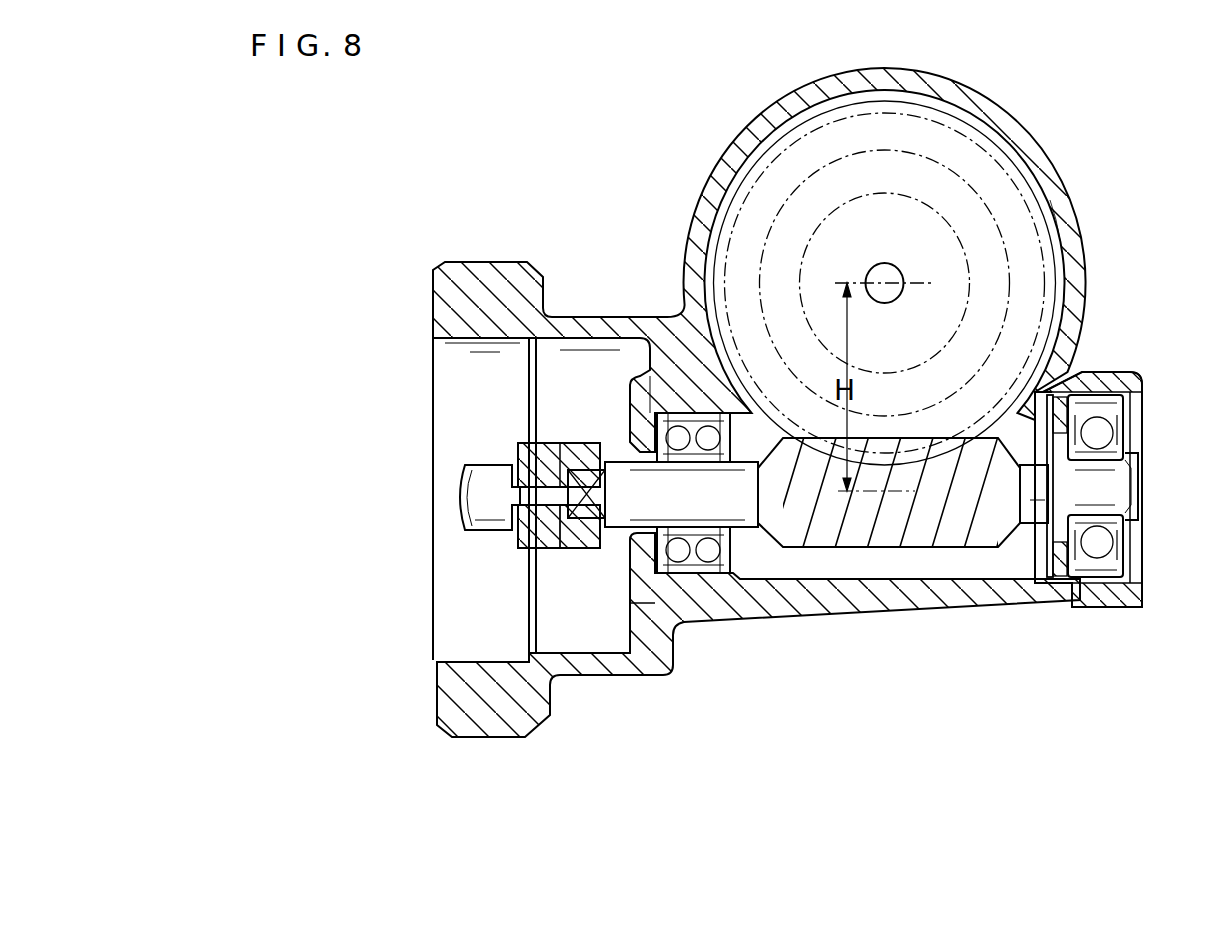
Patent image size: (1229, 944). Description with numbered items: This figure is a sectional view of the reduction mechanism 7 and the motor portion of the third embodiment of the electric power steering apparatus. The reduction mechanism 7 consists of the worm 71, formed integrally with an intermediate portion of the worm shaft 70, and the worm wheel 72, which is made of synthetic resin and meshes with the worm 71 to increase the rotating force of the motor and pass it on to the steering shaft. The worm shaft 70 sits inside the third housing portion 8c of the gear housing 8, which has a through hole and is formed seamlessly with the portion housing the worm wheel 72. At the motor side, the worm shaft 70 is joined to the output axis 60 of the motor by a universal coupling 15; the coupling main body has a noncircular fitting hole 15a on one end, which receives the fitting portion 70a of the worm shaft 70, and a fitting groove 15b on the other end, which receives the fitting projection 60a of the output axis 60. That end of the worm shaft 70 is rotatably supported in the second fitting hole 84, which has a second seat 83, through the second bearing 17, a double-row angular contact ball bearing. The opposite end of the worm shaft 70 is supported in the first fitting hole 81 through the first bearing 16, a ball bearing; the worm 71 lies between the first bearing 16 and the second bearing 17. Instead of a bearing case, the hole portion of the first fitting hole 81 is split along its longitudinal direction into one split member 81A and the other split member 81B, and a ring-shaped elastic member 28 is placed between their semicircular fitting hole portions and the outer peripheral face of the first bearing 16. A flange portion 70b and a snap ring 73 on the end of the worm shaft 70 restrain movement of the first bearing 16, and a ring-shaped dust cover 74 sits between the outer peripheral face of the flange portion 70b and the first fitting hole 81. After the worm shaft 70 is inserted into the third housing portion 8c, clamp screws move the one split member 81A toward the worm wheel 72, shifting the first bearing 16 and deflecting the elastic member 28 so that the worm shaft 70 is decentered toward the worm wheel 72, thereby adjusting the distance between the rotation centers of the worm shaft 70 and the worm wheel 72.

The gear housing 8 is at (1016, 100).
The reduction mechanism 7 is at (1020, 158).
The worm wheel 72 is at (1040, 185).
The second fitting hole 84 is at (668, 410).
The second seat 83 is at (632, 422).
The other split member 81B is at (1105, 372).
The fitting projection 60a is at (532, 470).
The universal coupling 15 is at (576, 443).
The output axis 60 is at (465, 487).
The snap ring 73 is at (1132, 462).
The first bearing 16 is at (1122, 560).
The first fitting hole 81 is at (1142, 586).
The third housing portion 8c is at (805, 568).
The dust cover 74 is at (1048, 530).
The elastic member 28 is at (1092, 592).
The one split member 81A is at (1122, 610).
The flange portion 70b is at (1045, 522).
The worm 71 is at (858, 542).
The worm shaft 70 is at (921, 546).
The second bearing 17 is at (690, 566).
The fitting hole 15a is at (607, 522).
The fitting portion 70a is at (578, 550).
The fitting groove 15b is at (533, 560).